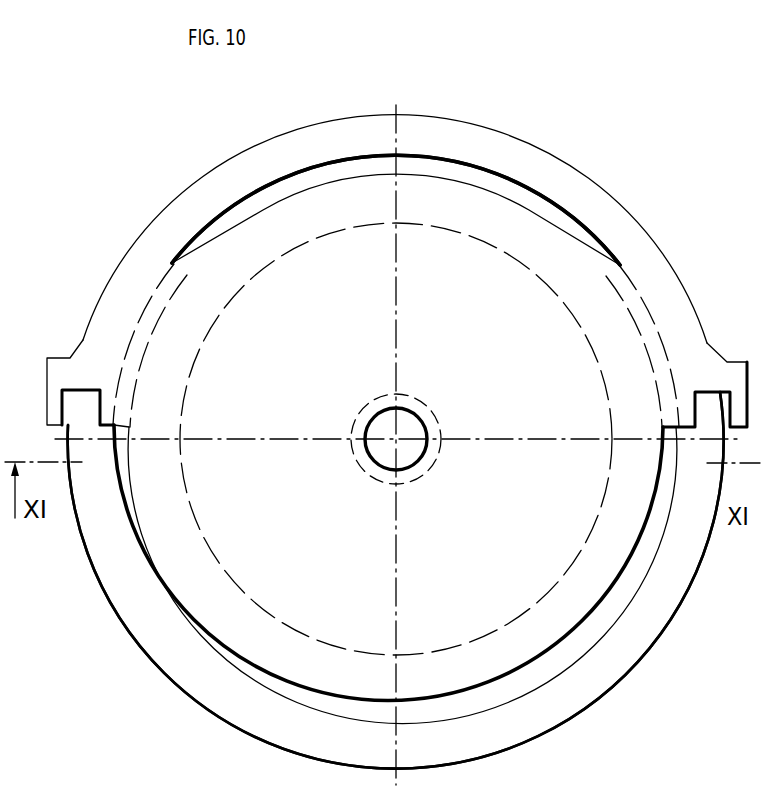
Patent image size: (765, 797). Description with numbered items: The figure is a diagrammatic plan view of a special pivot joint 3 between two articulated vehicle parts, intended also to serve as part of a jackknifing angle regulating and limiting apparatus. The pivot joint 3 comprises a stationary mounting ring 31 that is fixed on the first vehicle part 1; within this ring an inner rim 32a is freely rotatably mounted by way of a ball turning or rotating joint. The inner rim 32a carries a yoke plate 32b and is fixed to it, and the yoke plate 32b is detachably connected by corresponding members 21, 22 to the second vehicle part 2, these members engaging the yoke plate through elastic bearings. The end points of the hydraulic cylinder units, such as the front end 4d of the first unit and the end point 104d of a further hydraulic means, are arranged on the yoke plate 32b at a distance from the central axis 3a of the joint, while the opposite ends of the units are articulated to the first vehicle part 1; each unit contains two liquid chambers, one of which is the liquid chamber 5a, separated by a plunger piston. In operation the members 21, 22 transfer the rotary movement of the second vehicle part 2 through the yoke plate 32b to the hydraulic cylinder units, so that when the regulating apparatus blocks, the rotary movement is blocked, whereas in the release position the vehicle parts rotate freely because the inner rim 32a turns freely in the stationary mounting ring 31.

The pivot joint 3 is at (634, 142).
The central axis 3a is at (396, 439).
The stationary mounting ring 31 is at (182, 665).
The vehicle part 1 is at (396, 580).
The yoke plate 32b is at (272, 362).
The vehicle part 2 is at (396, 210).
The inner rim 32a is at (173, 602).
The member 22 is at (132, 785).
The liquid chamber 5a is at (208, 791).
The front end 4d is at (646, 791).
The end point 104d is at (646, 791).
The member 21 is at (727, 786).